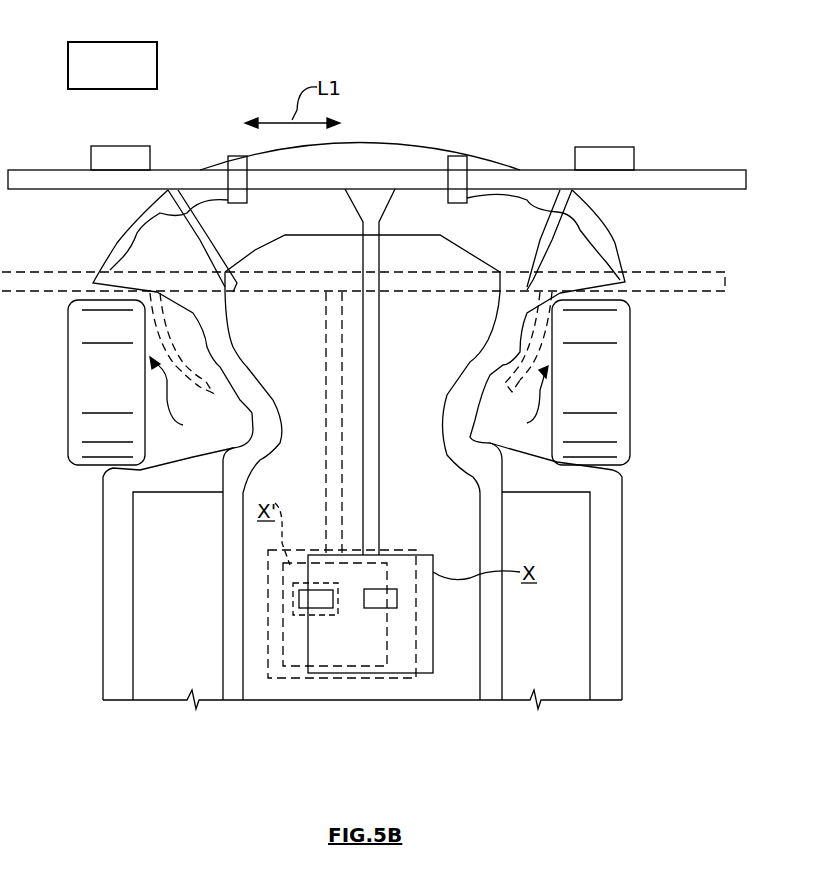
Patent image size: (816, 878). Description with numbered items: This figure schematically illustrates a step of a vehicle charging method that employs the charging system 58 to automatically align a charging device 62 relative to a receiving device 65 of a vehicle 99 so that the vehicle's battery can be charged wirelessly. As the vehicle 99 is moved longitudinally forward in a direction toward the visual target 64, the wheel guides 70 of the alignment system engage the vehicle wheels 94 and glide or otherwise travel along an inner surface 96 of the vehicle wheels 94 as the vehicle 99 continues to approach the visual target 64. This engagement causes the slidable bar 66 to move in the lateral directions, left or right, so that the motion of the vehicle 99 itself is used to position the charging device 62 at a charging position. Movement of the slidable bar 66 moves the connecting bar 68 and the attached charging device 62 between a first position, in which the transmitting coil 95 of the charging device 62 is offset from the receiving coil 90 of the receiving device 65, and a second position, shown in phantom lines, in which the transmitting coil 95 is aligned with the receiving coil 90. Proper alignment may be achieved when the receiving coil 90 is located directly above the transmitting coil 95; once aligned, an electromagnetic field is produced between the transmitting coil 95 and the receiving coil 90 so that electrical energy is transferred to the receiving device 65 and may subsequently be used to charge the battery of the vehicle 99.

The charging system 58 is at (377, 125).
The charging device 62 is at (283, 615).
The visual target 64 is at (103, 47).
The receiving device 65 is at (282, 678).
The slidable bar 66 is at (513, 177).
The connecting bar 68 is at (373, 260).
The wheel guides 70 is at (187, 228).
The receiving coil 90 is at (323, 600).
The vehicle wheels 94 is at (88, 372).
The transmitting coil 95 is at (377, 610).
The inner surface 96 is at (349, 399).
The vehicle 99 is at (577, 608).